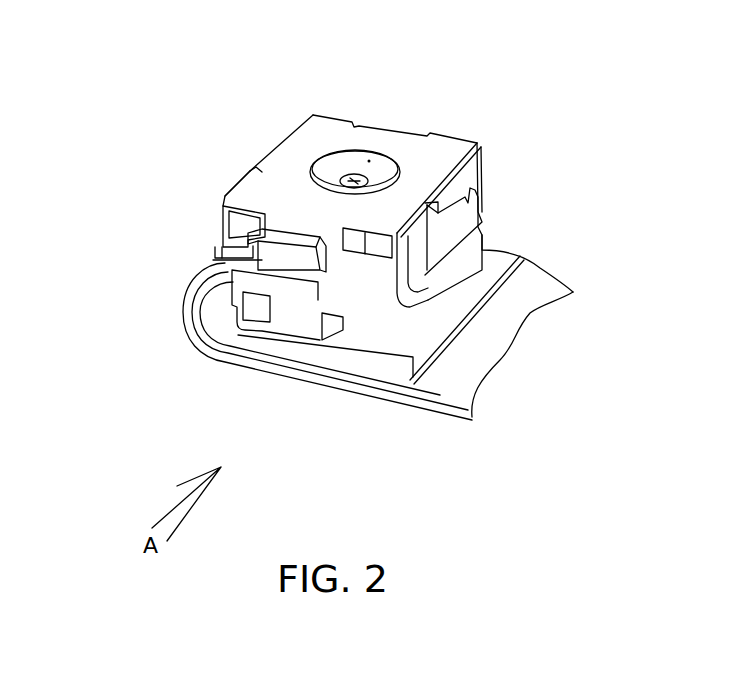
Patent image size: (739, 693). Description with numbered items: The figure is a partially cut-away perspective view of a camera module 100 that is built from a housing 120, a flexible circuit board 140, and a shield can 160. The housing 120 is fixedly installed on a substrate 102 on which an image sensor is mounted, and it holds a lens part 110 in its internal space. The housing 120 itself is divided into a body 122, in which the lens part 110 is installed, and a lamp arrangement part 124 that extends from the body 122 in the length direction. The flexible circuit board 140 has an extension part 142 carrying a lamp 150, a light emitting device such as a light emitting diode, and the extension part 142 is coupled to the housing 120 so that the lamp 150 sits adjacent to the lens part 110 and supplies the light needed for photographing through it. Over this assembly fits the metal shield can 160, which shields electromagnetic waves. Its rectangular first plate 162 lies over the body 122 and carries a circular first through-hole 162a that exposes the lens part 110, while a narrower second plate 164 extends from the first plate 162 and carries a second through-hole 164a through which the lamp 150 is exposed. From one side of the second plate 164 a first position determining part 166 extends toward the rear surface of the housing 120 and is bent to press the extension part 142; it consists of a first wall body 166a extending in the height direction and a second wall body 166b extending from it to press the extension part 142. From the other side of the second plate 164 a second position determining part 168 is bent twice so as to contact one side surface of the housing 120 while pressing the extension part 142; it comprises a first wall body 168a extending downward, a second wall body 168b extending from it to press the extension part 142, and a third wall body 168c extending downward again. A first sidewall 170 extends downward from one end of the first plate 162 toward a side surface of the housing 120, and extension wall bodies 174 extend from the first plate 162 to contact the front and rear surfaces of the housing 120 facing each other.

The camera module 100 is at (378, 48).
The substrate 102 is at (522, 257).
The lens part 110 is at (341, 172).
The housing 120 is at (426, 320).
The body 122 is at (470, 224).
The lamp arrangement part 124 is at (292, 320).
The flexible circuit board 140 is at (507, 323).
The extension part 142 is at (186, 318).
The lamp 150 is at (242, 318).
The shield can 160 is at (487, 143).
The first plate 162 is at (446, 149).
The first through-hole 162a is at (370, 160).
The second plate 164 is at (257, 227).
The second through-hole 164a is at (281, 230).
The first position determining part 166 is at (90, 208).
The first wall body 166a is at (222, 237).
The second wall body 166b is at (220, 242).
The second position determining part 168 is at (490, 450).
The first wall body 168a is at (362, 255).
The second wall body 168b is at (398, 275).
The third wall body 168c is at (440, 265).
The first sidewall 170 is at (478, 175).
The extension wall bodies 174 is at (222, 206).